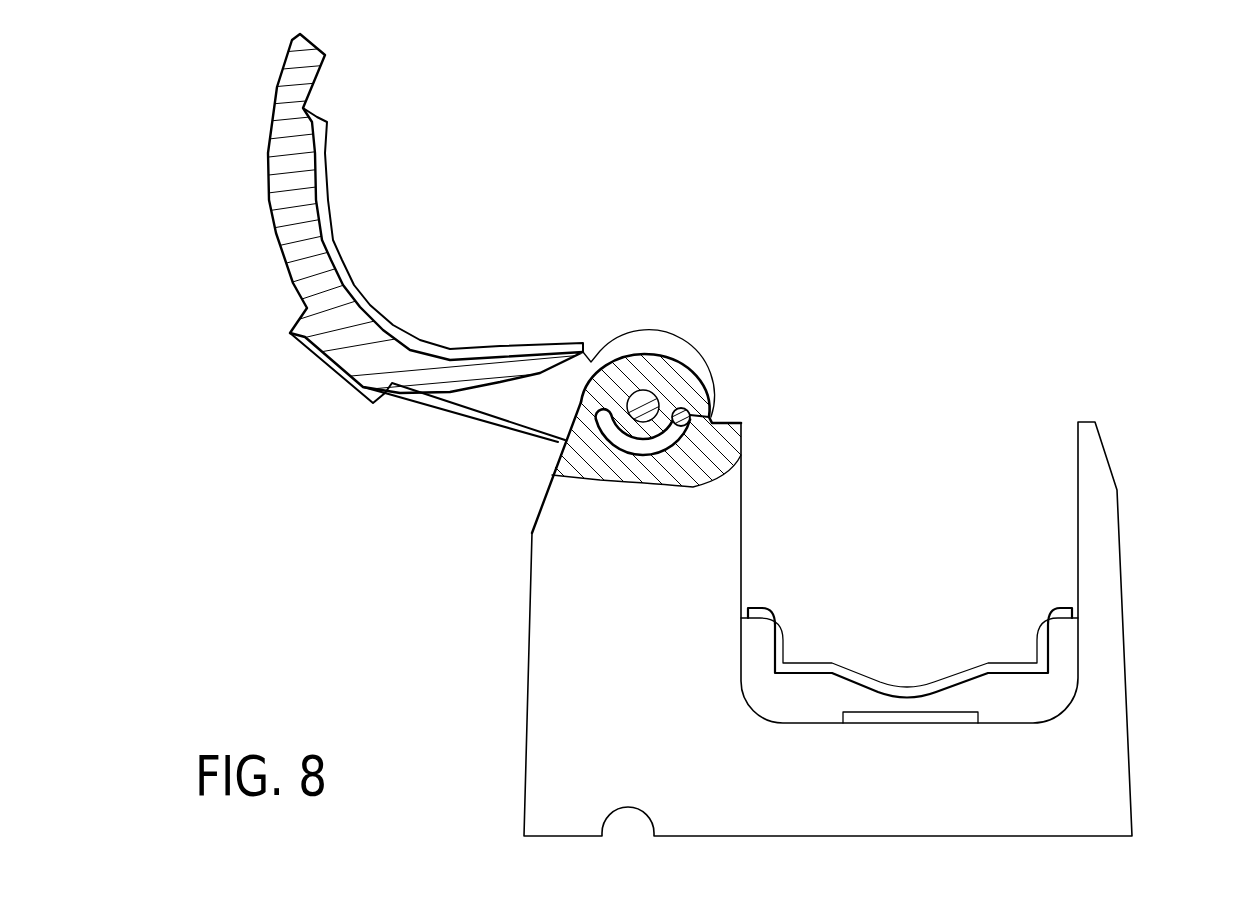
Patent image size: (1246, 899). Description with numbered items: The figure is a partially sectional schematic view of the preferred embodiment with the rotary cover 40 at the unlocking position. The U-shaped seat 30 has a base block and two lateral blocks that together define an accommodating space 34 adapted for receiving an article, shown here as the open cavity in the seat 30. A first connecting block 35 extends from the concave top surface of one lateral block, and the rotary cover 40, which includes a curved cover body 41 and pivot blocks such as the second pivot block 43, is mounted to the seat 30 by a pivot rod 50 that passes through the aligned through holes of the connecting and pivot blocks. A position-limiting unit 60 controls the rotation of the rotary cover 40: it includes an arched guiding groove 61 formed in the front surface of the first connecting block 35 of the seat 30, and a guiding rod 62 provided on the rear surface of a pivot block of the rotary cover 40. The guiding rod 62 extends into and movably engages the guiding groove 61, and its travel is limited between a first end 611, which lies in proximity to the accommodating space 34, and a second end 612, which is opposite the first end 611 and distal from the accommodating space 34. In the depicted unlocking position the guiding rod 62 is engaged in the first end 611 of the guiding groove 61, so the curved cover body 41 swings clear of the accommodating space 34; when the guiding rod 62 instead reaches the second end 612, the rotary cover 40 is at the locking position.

The U-shaped seat 30 is at (877, 571).
The accommodating space 34 is at (1004, 428).
The first connecting block 35 is at (625, 363).
The rotary cover 40 is at (364, 218).
The curved cover body 41 is at (272, 212).
The second pivot block 43 is at (647, 345).
The pivot rod 50 is at (653, 393).
The position-limiting unit 60 is at (607, 463).
The arched guiding groove 61 is at (645, 452).
The first end 611 is at (693, 410).
The second end 612 is at (578, 409).
The guiding rod 62 is at (690, 414).